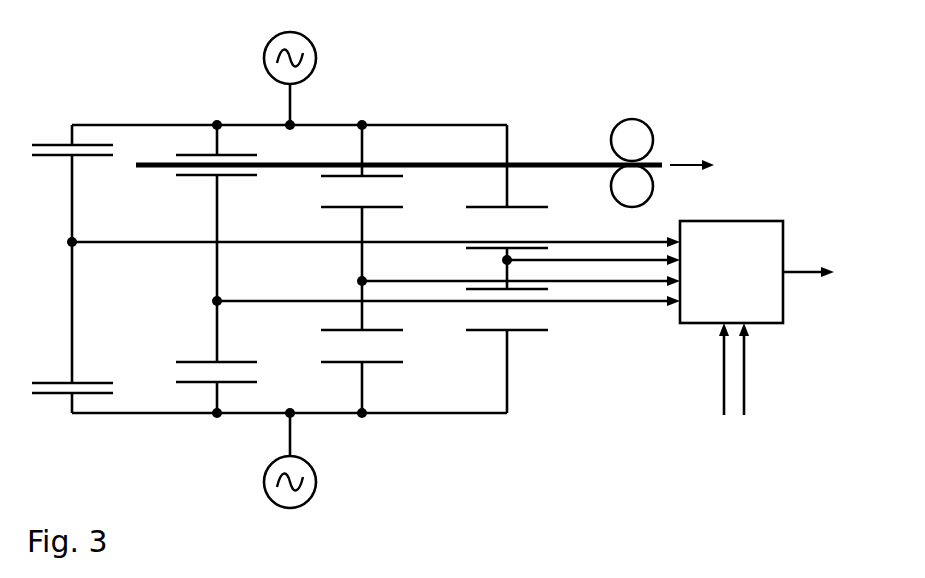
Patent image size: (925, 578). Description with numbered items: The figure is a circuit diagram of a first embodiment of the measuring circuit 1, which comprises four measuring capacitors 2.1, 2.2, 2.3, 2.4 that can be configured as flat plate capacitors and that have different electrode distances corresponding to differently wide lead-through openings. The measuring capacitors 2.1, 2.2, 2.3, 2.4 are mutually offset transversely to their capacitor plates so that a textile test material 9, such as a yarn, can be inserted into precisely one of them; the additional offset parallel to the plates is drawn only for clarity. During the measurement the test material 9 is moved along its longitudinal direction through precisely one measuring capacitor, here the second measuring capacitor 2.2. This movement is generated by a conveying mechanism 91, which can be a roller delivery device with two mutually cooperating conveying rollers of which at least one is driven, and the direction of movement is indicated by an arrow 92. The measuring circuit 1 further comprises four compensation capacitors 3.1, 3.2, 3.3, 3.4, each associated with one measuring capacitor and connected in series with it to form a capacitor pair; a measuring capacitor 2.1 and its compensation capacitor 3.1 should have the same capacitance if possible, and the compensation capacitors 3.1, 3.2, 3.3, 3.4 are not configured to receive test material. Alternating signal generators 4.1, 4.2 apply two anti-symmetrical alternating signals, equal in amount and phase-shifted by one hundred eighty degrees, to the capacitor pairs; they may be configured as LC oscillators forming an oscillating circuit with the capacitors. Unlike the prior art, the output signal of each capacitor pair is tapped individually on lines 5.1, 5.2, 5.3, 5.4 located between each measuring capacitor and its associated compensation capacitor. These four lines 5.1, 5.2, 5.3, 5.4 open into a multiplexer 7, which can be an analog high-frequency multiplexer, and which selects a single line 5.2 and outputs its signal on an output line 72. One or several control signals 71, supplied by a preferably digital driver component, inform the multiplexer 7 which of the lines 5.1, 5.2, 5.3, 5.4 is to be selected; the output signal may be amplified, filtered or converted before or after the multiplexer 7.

The measuring circuit 1 is at (68, 66).
The measuring capacitor 2.1 is at (90, 158).
The measuring capacitor 2.2 is at (238, 178).
The measuring capacitor 2.3 is at (390, 206).
The measuring capacitor 2.4 is at (530, 206).
The compensation capacitor 3.1 is at (92, 380).
The compensation capacitor 3.2 is at (238, 360).
The compensation capacitor 3.3 is at (388, 364).
The compensation capacitor 3.4 is at (525, 333).
The alternating signal generator 4.1 is at (317, 56).
The alternating signal generator 4.2 is at (317, 479).
The line 5.1 is at (148, 245).
The line 5.2 is at (293, 305).
The line 5.3 is at (433, 284).
The line 5.4 is at (605, 264).
The multiplexer 7 is at (760, 220).
The control signals 71 is at (724, 406).
The output line 72 is at (806, 276).
The textile test material 9 is at (150, 170).
The conveying mechanism 91 is at (634, 108).
The arrow 92 is at (694, 163).